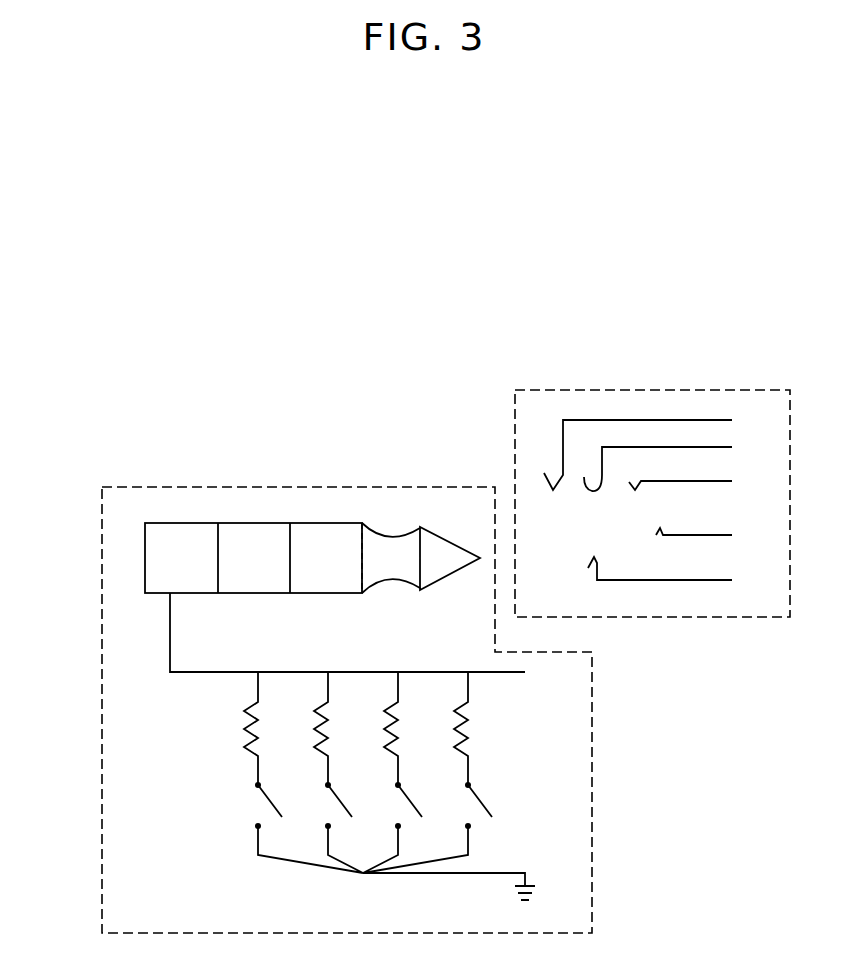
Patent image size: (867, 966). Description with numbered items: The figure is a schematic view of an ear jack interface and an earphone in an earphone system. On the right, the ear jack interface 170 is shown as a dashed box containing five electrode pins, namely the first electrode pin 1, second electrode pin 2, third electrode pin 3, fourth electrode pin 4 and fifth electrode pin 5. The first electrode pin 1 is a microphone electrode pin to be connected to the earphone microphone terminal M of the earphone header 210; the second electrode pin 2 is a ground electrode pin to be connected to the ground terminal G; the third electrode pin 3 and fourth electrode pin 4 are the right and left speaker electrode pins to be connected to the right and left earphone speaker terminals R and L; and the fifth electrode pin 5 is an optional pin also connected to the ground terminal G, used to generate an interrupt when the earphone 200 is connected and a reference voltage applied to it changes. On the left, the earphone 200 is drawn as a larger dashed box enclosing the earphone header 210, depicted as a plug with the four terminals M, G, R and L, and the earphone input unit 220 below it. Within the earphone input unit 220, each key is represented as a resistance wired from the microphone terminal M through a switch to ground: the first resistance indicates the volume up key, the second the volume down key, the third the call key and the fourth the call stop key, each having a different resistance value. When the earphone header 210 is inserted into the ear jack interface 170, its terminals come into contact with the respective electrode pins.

The earphone 200 is at (243, 487).
The earphone header 210 is at (126, 558).
The earphone input unit 220 is at (569, 697).
The ear jack interface 170 is at (590, 388).
The first electrode pin 1 is at (648, 448).
The second electrode pin 2 is at (668, 462).
The third electrode pin 3 is at (691, 481).
The fourth electrode pin 4 is at (704, 535).
The fifth electrode pin 5 is at (670, 576).